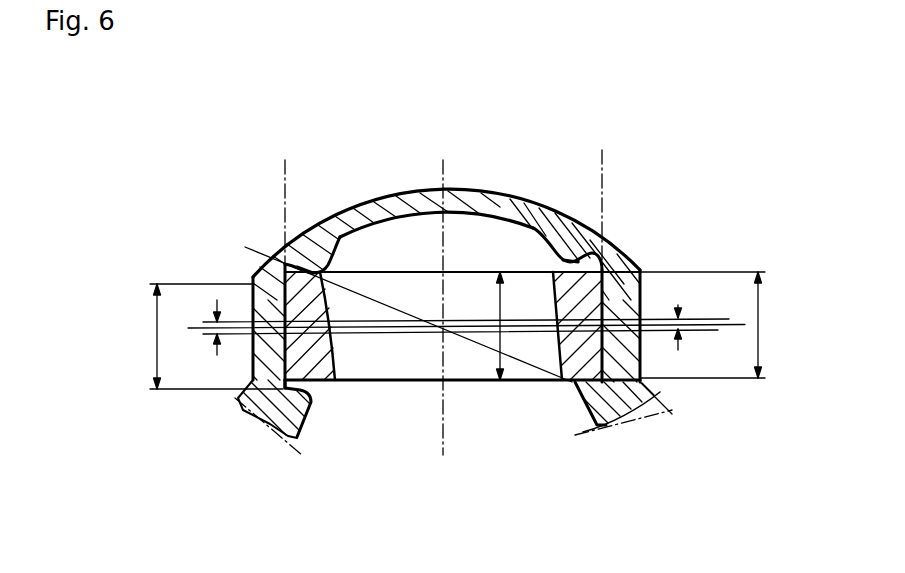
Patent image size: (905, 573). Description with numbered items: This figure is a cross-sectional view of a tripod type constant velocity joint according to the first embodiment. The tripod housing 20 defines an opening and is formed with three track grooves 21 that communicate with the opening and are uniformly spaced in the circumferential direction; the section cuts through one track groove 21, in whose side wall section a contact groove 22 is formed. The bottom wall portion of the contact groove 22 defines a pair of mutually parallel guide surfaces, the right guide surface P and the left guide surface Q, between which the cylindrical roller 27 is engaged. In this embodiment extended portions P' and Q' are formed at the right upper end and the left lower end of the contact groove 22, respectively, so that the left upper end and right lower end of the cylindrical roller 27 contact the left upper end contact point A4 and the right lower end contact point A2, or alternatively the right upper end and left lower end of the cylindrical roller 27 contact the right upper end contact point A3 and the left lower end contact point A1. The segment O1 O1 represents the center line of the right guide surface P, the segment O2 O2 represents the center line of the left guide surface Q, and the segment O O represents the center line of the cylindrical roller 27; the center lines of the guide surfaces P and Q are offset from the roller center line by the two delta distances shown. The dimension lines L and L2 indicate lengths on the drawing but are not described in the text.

The tripod housing 20 is at (637, 270).
The track groove 21 is at (400, 245).
The contact groove 22 is at (348, 280).
The cylindrical roller 27 is at (562, 382).
The left lower end contact point A1 is at (290, 437).
The right lower end contact point A2 is at (605, 423).
The right upper end contact point A3 is at (570, 260).
The left upper end contact point A4 is at (315, 270).
The right guide surface P is at (603, 196).
The extended portion P' is at (522, 174).
The left guide surface Q is at (284, 195).
The extended portion Q' is at (311, 465).
The length L is at (631, 326).
The length L2 is at (203, 336).
The center line of the cylindrical roller O is at (463, 324).
The center line of the right guide surface O1 is at (466, 304).
The center line of the left guide surface O2 is at (462, 347).